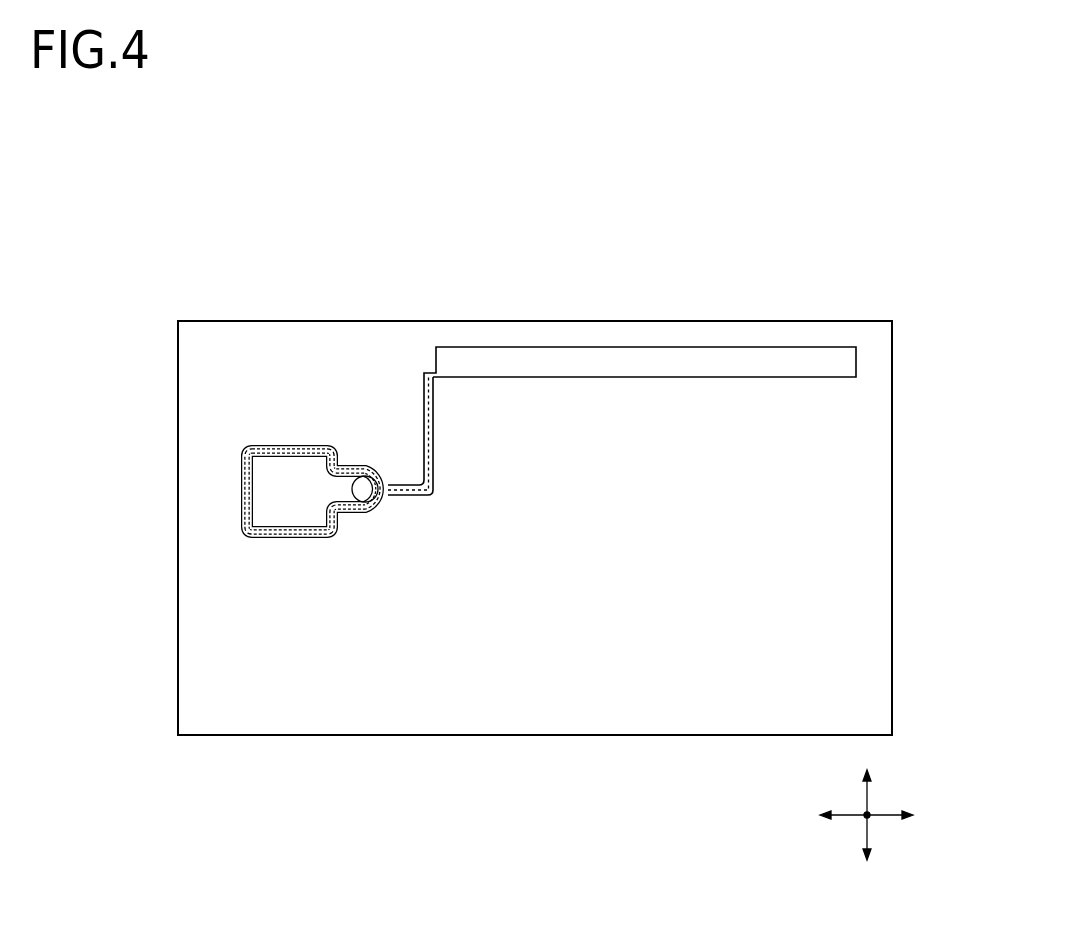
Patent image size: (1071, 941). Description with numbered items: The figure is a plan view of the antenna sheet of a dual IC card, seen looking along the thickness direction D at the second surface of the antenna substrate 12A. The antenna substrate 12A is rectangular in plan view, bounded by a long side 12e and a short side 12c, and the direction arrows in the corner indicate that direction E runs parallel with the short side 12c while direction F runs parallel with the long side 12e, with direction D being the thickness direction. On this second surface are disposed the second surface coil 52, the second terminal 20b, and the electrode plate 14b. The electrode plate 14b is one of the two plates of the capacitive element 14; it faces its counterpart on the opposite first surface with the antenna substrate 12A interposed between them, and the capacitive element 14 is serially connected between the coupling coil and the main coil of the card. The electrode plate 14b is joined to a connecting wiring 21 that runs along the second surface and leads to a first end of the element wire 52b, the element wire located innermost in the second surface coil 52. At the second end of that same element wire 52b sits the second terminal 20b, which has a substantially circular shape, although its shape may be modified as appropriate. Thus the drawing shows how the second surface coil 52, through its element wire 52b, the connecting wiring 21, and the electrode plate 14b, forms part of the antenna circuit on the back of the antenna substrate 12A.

The antenna substrate 12A is at (893, 396).
The short side 12c is at (178, 520).
The long side 12e is at (598, 737).
The electrode plate 14b is at (622, 369).
The capacitive element 14 is at (644, 360).
The connecting wiring 21 is at (437, 448).
The second surface coil 52 is at (213, 514).
The element wire 52b is at (288, 537).
The second terminal 20b is at (365, 489).
The direction E is at (867, 795).
The direction F is at (853, 816).
The direction D is at (875, 817).